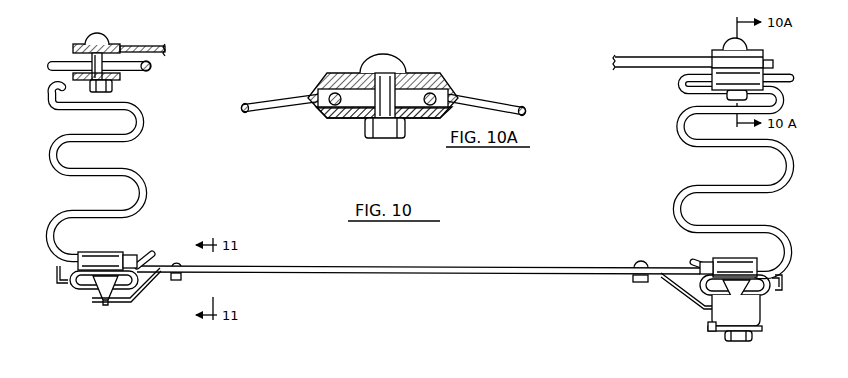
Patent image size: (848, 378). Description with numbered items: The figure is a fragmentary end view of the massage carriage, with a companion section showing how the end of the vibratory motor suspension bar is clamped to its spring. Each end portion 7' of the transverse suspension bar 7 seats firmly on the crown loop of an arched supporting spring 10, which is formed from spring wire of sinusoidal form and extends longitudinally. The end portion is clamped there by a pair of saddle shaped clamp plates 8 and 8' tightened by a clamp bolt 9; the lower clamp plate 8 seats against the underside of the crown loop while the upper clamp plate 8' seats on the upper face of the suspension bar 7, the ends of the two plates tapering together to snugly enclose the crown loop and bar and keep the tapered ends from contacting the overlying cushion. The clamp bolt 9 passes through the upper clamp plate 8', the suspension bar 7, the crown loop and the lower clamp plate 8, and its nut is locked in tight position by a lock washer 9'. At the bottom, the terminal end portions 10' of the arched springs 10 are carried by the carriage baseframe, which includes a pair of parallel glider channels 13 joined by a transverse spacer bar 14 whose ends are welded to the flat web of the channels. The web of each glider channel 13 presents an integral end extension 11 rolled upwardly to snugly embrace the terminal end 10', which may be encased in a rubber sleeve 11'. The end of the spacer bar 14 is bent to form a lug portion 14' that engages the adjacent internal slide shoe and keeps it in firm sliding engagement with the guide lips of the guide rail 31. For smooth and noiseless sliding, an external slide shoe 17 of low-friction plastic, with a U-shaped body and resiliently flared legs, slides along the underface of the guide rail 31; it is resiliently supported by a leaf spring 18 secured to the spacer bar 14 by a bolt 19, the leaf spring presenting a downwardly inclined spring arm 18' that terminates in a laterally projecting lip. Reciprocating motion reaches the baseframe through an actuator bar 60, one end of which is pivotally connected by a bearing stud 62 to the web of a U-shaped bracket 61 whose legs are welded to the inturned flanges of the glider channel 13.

In FIG. 10, the transverse suspension bar 7 is at (662, 47).
In FIG. 10, the end portion of suspension bar 7' is at (424, 44).
In FIG. 10, the lower clamp plate 8 is at (418, 89).
In FIG. 10A, the lower clamp plate 8 is at (373, 124).
In FIG. 10, the upper clamp plate 8' is at (418, 45).
In FIG. 10A, the upper clamp plate 8' is at (392, 87).
In FIG. 10, the clamp bolt 9 is at (416, 59).
In FIG. 10A, the clamp bolt 9 is at (393, 75).
In FIG. 10, the lock washer 9' is at (127, 90).
In FIG. 10A, the lock washer 9' is at (365, 137).
In FIG. 10, the arched supporting spring 10 is at (437, 176).
In FIG. 10A, the arched supporting spring 10 is at (384, 93).
In FIG. 10, the terminal end portion of arched spring 10' is at (422, 247).
In FIG. 10, the end extension 11 is at (418, 252).
In FIG. 10, the rubber sleeve 11' is at (430, 251).
In FIG. 10, the glider channel 13 is at (74, 285).
In FIG. 10, the upper spacer bar 14 is at (418, 281).
In FIG. 10, the bent lug portion 14' is at (422, 274).
In FIG. 10, the external slide shoe 17 is at (99, 300).
In FIG. 10, the leaf spring 18 is at (357, 302).
In FIG. 10, the downwardly inclined spring arm 18' is at (701, 295).
In FIG. 10, the bolt 19 is at (178, 282).
In FIG. 10, the guide rail 31 is at (750, 290).
In FIG. 10, the actuator bar 60 is at (715, 331).
In FIG. 10, the U-shaped bracket 61 is at (708, 313).
In FIG. 10, the bearing stud 62 is at (740, 341).